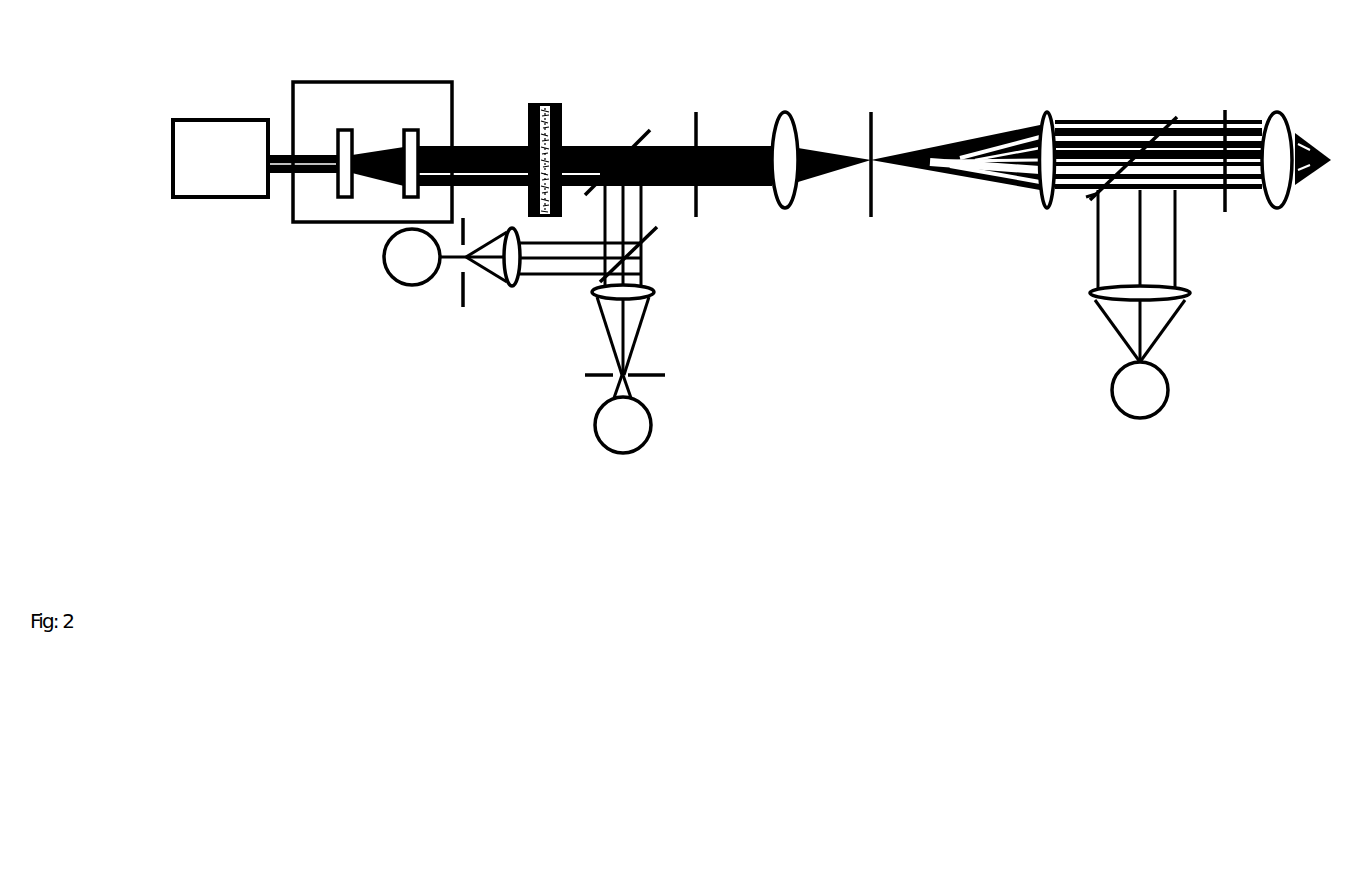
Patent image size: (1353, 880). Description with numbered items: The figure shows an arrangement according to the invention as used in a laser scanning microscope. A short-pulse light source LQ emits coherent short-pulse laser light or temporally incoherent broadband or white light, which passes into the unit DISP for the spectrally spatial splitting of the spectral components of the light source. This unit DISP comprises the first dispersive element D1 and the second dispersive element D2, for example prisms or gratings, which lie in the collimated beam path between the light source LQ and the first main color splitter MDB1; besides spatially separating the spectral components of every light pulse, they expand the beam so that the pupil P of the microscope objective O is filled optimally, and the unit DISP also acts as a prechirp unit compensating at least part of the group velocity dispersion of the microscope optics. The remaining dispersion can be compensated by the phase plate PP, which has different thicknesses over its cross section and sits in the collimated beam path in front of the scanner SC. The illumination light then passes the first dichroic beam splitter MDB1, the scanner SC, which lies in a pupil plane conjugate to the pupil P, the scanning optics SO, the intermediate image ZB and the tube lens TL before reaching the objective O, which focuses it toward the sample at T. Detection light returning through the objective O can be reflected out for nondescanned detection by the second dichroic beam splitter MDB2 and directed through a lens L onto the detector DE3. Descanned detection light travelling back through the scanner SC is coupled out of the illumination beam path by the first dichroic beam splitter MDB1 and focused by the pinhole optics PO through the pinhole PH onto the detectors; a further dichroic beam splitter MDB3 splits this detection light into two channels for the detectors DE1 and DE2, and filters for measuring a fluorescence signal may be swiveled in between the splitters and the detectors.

The short-pulse light source LQ is at (220, 158).
The unit for spectrally spatial splitting DISP is at (372, 127).
The first dispersive element D1 is at (335, 145).
The second dispersive element D2 is at (413, 145).
The phase plate PP is at (545, 144).
The first dichroic beam splitter (main color splitter) MDB1 is at (622, 136).
The scanner SC is at (702, 143).
The scanning optics SO is at (783, 186).
The intermediate image ZB is at (868, 186).
The tube lens TL is at (1054, 186).
The second dichroic beam splitter MDB2 is at (1131, 137).
The pupil of the microscope objective P is at (1227, 185).
The microscope objective O is at (1277, 186).
The target / sample focus T is at (1316, 136).
The lens L is at (1162, 300).
The detector for nondescanned detection DE3 is at (1128, 414).
The third dichroic beam splitter MDB3 is at (664, 254).
The pinhole optics PO is at (604, 297).
The pinhole PH is at (577, 296).
The first detector DE1 is at (659, 425).
The second detector DE2 is at (389, 273).